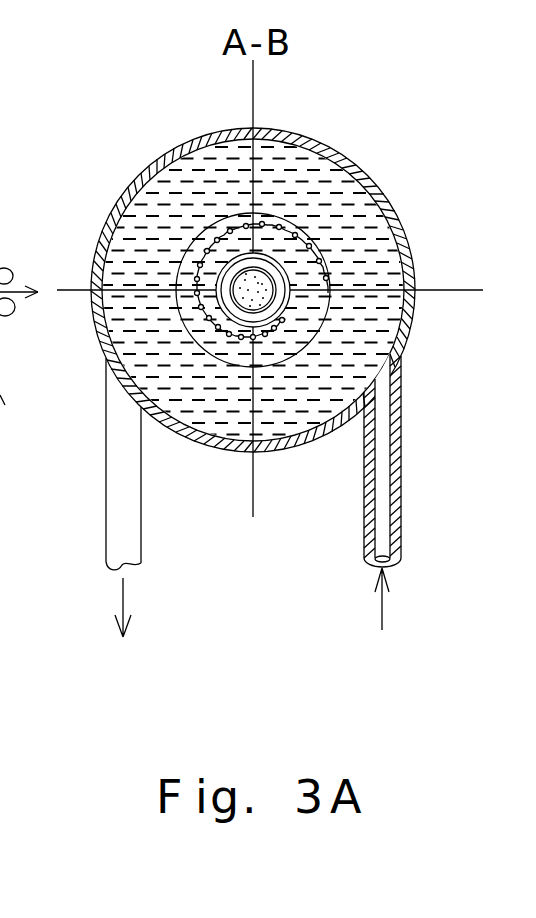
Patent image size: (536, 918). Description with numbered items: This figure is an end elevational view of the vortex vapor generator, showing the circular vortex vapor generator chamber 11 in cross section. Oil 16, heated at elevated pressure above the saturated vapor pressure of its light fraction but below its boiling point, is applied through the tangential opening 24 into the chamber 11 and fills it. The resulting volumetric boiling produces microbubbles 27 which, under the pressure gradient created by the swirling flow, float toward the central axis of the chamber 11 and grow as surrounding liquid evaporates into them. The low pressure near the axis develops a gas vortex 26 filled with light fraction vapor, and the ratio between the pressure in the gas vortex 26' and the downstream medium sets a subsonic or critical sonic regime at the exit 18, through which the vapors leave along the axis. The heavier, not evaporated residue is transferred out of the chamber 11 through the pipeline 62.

The vortex vapor generator chamber 11 is at (171, 136).
The oil 16 is at (338, 240).
The microbubbles 27 is at (268, 228).
The gas vortex 26 is at (356, 331).
The gas vortex 26' is at (16, 421).
The exit 18 is at (19, 189).
The pipeline 62 is at (127, 535).
The tangential opening 24 is at (383, 548).